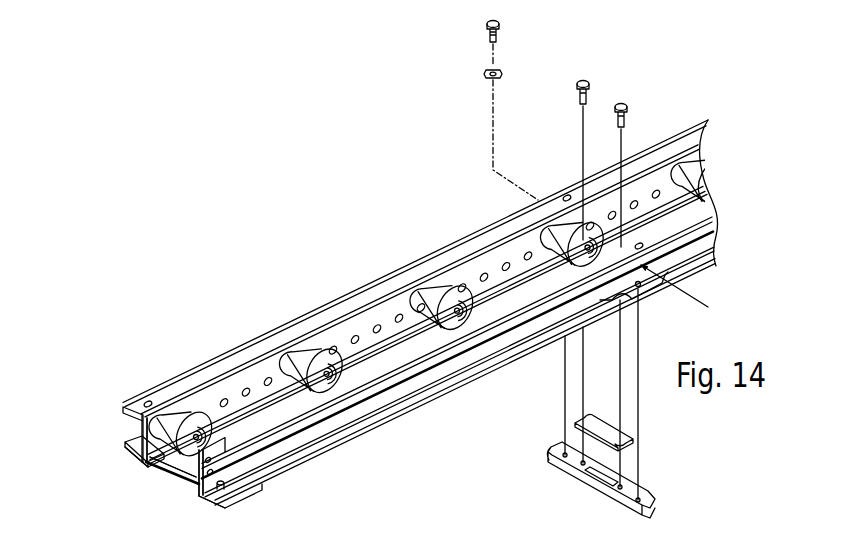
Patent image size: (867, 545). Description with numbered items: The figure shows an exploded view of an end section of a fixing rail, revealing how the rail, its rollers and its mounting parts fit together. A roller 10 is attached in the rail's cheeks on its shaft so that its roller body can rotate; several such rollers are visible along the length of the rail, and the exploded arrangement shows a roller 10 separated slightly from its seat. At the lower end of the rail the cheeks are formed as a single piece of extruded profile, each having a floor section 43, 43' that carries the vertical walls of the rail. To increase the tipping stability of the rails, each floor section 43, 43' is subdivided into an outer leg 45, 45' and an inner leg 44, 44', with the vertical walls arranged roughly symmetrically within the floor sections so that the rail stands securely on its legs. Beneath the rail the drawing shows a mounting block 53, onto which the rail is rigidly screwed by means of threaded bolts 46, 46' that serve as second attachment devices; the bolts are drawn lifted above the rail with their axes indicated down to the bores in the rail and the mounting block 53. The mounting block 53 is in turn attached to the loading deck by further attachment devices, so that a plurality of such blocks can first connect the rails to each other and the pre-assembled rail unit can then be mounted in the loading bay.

The roller 10 is at (298, 350).
The floor section 43 is at (116, 453).
The floor section 43' is at (188, 497).
The inner leg 44 is at (126, 486).
The inner leg 44' is at (166, 491).
The outer leg 45 is at (125, 436).
The outer leg 45' is at (252, 496).
The threaded bolt 46 is at (558, 153).
The threaded bolt 46' is at (650, 169).
The mounting block 53 is at (651, 498).